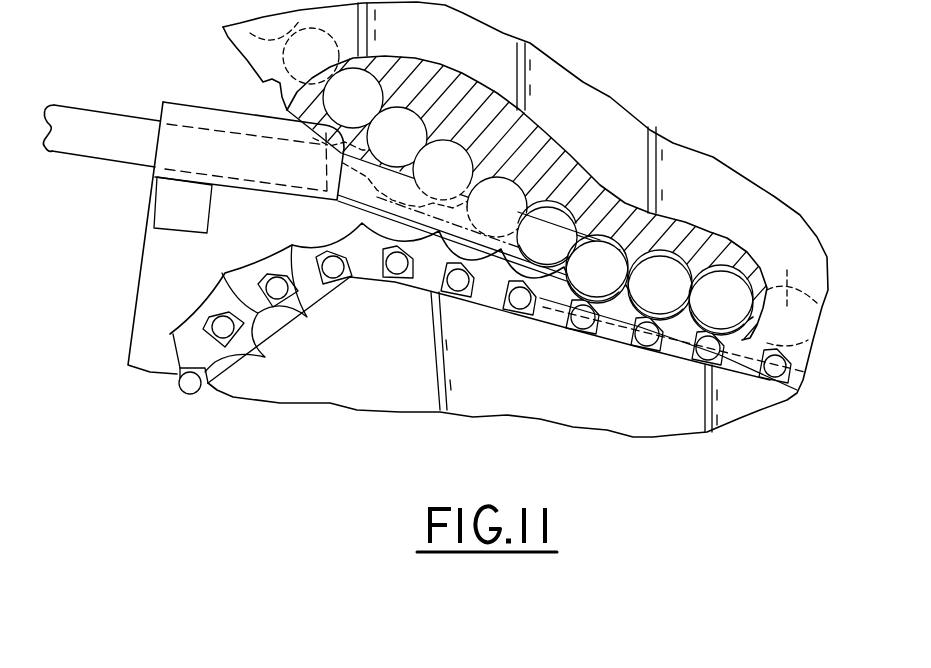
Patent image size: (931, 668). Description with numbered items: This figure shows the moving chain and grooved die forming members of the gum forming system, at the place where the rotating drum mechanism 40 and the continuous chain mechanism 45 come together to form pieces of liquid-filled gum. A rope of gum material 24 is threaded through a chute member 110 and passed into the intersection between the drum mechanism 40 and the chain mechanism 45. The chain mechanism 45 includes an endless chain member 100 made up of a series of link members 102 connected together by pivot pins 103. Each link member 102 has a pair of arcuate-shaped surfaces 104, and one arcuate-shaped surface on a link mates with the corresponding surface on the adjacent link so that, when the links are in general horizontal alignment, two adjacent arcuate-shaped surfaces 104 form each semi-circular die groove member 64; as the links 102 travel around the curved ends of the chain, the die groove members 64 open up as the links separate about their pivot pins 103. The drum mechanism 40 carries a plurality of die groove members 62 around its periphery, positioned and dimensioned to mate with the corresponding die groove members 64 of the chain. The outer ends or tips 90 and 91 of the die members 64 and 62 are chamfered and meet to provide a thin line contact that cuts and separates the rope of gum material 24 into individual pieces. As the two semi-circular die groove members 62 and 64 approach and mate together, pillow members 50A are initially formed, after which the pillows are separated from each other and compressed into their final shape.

The rope of gum material 24 is at (90, 112).
The chute member 110 is at (173, 163).
The arcuate-shaped surfaces 104 is at (246, 256).
The outer ends or tips of semi-circular die members 90 is at (292, 234).
The pivot pins 103 is at (308, 318).
The link members 102 is at (266, 358).
The continuous chain mechanism 45 is at (137, 312).
The endless chain member 100 is at (425, 294).
The semi-circular die groove members 64 is at (541, 303).
The die groove members 62 is at (449, 152).
The outer ends or tips of semi-circular die members 91 is at (551, 139).
The rotating drum mechanism 40 is at (606, 101).
The pillow members 50A is at (738, 298).